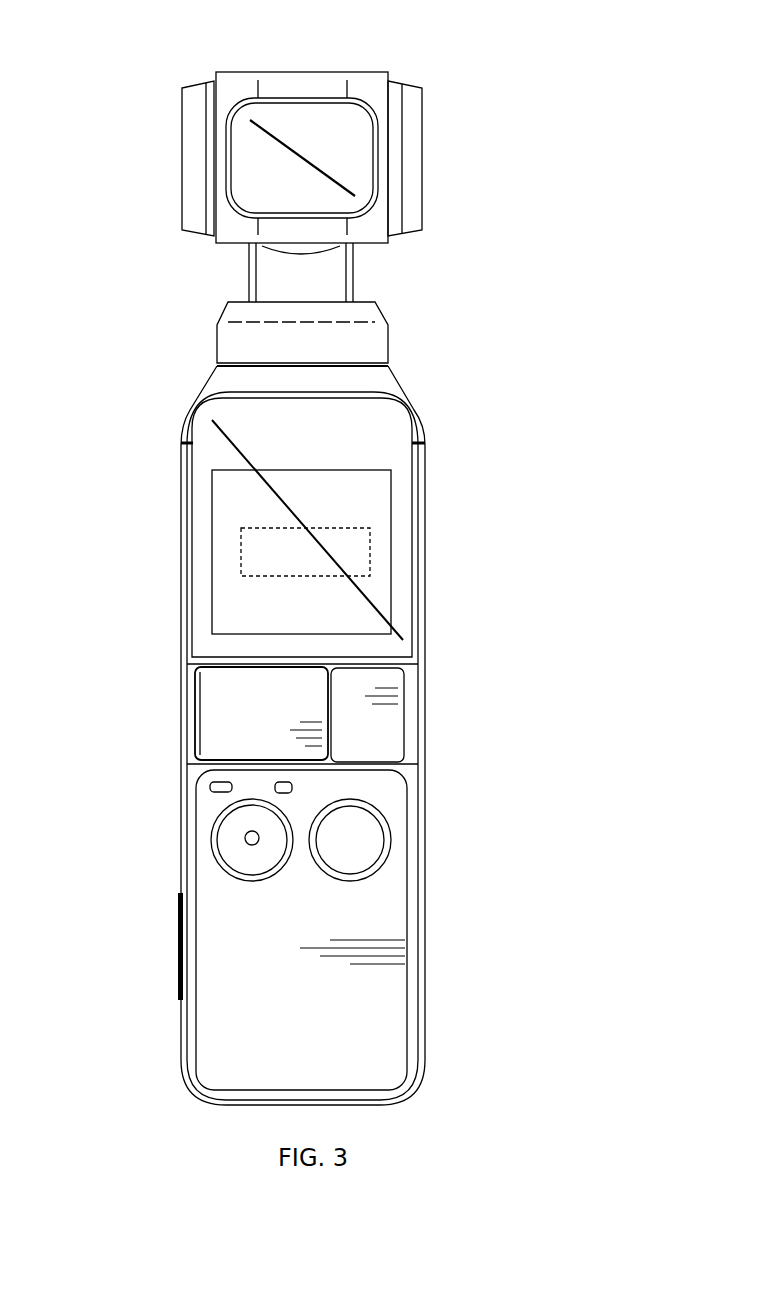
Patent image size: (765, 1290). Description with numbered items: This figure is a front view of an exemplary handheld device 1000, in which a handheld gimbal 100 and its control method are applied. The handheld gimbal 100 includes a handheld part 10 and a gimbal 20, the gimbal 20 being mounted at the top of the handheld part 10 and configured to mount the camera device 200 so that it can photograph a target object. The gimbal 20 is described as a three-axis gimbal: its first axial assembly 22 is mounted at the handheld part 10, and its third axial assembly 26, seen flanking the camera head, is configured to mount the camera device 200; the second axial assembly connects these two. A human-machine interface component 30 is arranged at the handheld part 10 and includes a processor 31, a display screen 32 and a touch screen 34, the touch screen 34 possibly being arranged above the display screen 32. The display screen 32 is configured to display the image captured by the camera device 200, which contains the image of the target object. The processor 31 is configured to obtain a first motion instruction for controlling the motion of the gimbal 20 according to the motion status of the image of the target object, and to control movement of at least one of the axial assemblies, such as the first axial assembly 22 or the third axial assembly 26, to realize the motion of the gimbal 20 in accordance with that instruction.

The handheld device 1000 is at (138, 38).
The camera device 200 is at (297, 135).
The gimbal 20 is at (434, 209).
The third axial assembly 26 is at (196, 127).
The first axial assembly 22 is at (358, 338).
The handheld gimbal 100 is at (165, 392).
The handheld part 10 is at (427, 677).
The human-machine interface component 30 is at (400, 488).
The touch screen 34 is at (222, 532).
The processor 31 is at (241, 573).
The display screen 32 is at (372, 568).